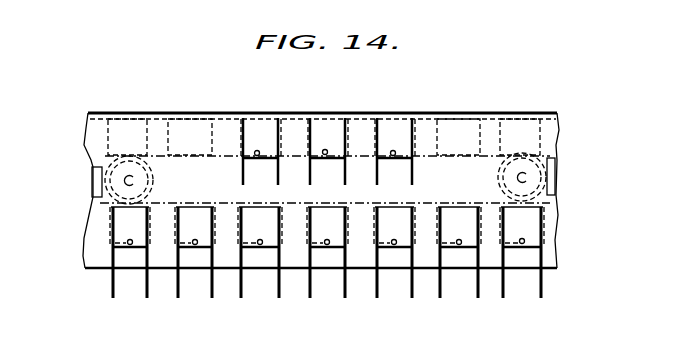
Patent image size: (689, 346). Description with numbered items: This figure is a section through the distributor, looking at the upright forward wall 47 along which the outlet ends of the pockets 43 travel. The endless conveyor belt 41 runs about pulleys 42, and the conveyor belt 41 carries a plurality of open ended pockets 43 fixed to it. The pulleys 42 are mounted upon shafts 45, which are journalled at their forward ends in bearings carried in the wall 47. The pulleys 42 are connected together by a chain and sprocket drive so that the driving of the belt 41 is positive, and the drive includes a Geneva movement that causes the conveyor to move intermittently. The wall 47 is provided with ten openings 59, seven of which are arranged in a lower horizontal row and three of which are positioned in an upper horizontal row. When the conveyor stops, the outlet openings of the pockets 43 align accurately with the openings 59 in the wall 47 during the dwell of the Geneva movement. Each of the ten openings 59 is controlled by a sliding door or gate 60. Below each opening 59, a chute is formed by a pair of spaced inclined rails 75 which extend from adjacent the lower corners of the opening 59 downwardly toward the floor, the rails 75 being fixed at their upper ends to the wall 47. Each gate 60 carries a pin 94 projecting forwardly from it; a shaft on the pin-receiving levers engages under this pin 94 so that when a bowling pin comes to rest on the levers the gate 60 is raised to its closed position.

The endless conveyor belt 41 is at (162, 153).
The pulleys 42 is at (558, 158).
The pockets 43 is at (482, 117).
The shafts 45 is at (108, 182).
The upright forward wall 47 is at (94, 220).
The openings 59 is at (268, 132).
The sliding door or gate 60 is at (405, 138).
The inclined rails 75 is at (242, 184).
The pin 94 is at (258, 150).